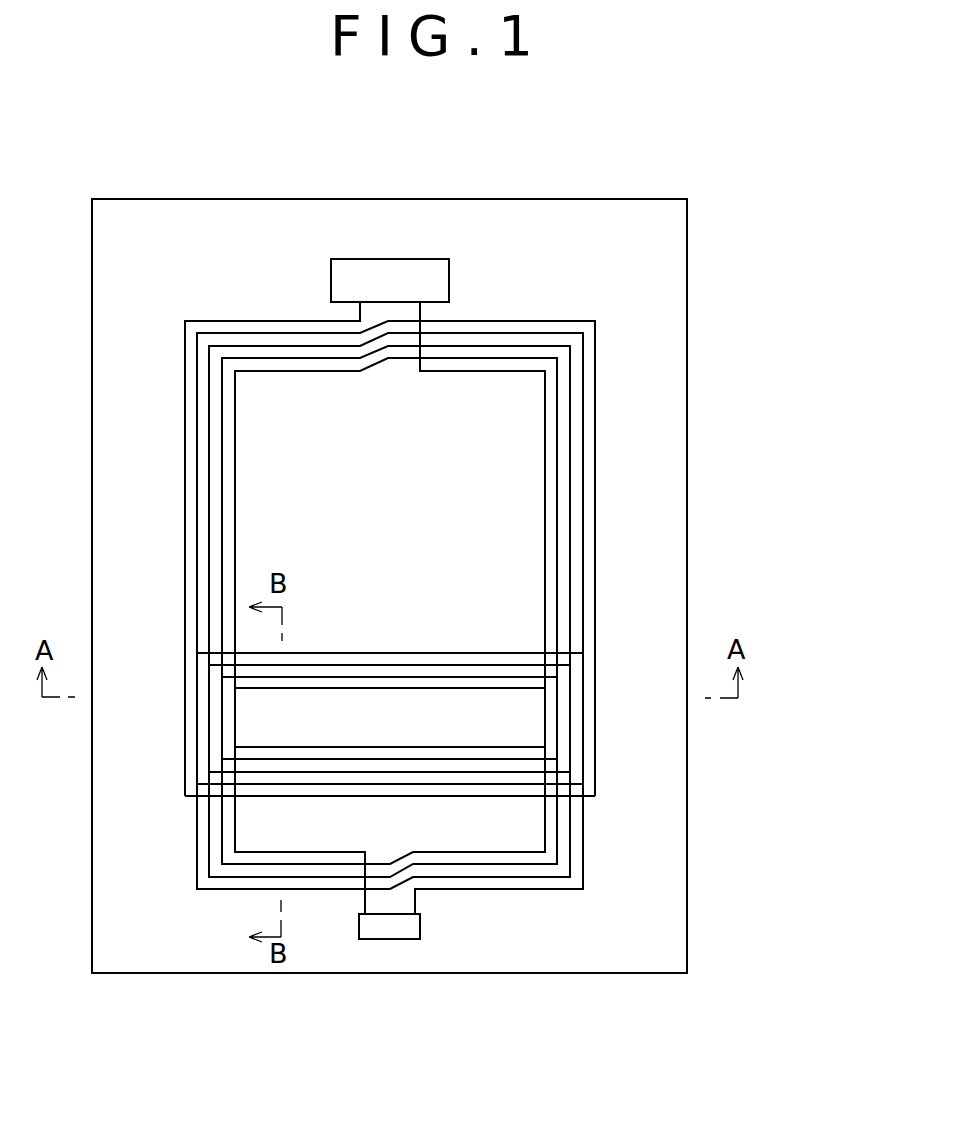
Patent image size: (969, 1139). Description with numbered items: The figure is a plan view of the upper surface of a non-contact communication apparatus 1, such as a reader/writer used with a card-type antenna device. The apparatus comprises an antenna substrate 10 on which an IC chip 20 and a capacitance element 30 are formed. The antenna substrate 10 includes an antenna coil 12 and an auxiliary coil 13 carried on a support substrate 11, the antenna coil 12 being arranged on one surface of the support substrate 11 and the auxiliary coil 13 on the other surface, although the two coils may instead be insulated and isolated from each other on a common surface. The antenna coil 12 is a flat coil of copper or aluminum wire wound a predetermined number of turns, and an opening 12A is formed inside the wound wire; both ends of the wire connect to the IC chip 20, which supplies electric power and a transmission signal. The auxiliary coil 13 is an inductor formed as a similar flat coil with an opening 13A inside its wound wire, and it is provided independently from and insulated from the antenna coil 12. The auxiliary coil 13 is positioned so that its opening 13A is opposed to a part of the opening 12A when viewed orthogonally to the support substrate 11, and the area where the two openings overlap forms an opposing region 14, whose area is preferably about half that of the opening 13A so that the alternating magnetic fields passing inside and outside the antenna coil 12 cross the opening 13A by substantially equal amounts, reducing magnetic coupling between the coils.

The non-contact communication apparatus 1 is at (633, 132).
The antenna substrate 10 is at (512, 606).
The support substrate 11 is at (677, 321).
The antenna coil 12 is at (597, 375).
The opening 12A is at (513, 434).
The auxiliary coil 13 is at (585, 853).
The opening 13A is at (499, 855).
The opposing region 14 is at (515, 728).
The IC chip 20 is at (391, 277).
The capacitance element 30 is at (390, 928).